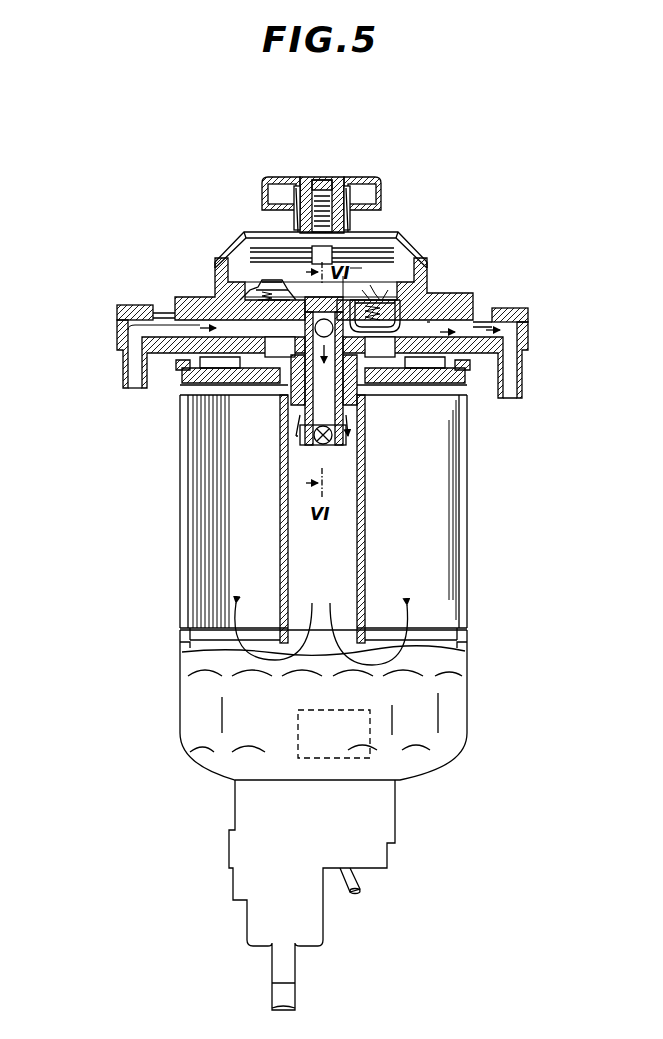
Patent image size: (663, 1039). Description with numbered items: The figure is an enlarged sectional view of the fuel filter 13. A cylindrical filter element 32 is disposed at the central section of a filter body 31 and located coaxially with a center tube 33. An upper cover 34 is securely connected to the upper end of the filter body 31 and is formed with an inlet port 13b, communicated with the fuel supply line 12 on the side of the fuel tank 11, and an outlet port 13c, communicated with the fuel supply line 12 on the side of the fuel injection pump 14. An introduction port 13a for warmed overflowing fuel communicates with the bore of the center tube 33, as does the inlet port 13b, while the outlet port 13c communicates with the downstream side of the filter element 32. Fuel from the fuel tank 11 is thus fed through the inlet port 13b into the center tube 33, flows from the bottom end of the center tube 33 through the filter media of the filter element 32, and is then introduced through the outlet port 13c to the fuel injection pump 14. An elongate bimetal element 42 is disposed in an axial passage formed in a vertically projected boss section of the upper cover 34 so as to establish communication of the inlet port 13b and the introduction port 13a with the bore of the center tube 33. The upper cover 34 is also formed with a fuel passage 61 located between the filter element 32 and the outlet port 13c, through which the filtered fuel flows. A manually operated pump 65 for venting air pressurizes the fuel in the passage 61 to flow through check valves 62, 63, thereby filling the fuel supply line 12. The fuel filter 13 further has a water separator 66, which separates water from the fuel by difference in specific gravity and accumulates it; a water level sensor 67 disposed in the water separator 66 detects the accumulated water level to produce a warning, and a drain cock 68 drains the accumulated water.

The fuel tank 11 is at (135, 398).
The fuel supply line 12 is at (128, 366).
The fuel filter 13 is at (280, 166).
The introduction port 13a is at (345, 300).
The inlet port 13b is at (228, 325).
The outlet port 13c is at (482, 322).
The fuel injection pump 14 is at (512, 398).
The filter body 31 is at (468, 572).
The filter element 32 is at (197, 572).
The center tube 33 is at (281, 572).
The upper cover 34 is at (428, 322).
The bimetal element 42 is at (374, 362).
The fuel passage 61 is at (410, 292).
The check valve 62 is at (252, 250).
The check valve 63 is at (378, 300).
The manually operated pump 65 is at (326, 180).
The water separator 66 is at (448, 727).
The water level sensor 67 is at (370, 730).
The drain cock 68 is at (317, 908).